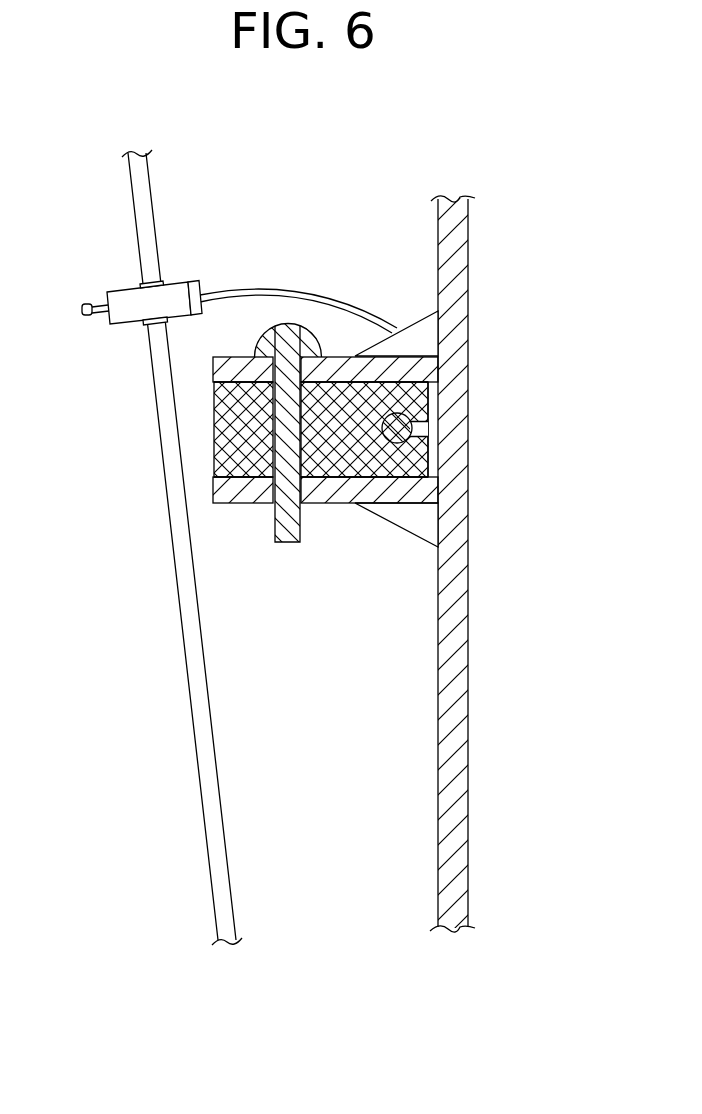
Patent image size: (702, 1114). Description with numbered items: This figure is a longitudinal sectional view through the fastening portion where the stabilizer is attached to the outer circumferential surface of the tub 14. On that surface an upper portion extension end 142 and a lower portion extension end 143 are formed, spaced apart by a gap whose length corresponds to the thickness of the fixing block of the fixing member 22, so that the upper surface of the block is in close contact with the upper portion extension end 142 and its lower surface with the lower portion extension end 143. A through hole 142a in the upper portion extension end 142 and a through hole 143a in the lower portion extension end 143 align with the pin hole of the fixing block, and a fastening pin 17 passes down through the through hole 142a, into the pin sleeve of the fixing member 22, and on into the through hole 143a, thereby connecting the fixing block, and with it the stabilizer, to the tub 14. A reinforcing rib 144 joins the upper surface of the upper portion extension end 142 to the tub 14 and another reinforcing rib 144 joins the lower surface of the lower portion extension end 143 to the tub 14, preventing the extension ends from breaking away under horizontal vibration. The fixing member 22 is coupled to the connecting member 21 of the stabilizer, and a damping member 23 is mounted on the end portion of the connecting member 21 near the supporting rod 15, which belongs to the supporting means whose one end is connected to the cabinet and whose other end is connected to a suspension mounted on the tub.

The tub 14 is at (460, 260).
The reinforcing rib 144 is at (415, 328).
The upper portion extension end 142 is at (230, 358).
The through hole 142a is at (225, 370).
The lower portion extension end 143 is at (227, 487).
The through hole 143a is at (270, 488).
The fixing member 22 is at (227, 448).
The fastening pin 17 is at (285, 543).
The connecting member 21 is at (277, 293).
The supporting rod 15 is at (138, 210).
The damping member 23 is at (173, 283).